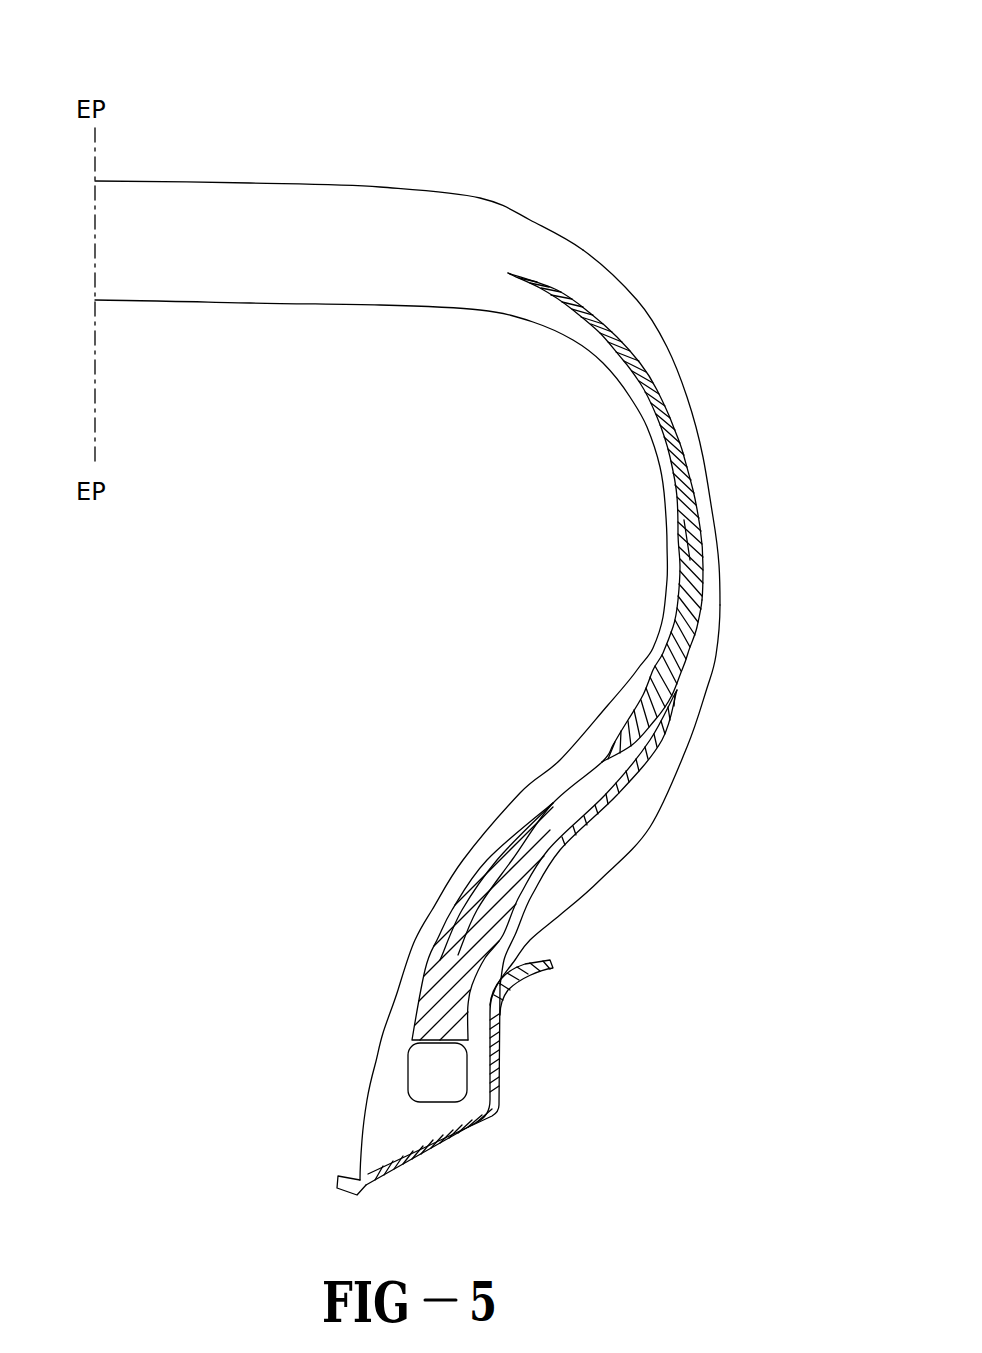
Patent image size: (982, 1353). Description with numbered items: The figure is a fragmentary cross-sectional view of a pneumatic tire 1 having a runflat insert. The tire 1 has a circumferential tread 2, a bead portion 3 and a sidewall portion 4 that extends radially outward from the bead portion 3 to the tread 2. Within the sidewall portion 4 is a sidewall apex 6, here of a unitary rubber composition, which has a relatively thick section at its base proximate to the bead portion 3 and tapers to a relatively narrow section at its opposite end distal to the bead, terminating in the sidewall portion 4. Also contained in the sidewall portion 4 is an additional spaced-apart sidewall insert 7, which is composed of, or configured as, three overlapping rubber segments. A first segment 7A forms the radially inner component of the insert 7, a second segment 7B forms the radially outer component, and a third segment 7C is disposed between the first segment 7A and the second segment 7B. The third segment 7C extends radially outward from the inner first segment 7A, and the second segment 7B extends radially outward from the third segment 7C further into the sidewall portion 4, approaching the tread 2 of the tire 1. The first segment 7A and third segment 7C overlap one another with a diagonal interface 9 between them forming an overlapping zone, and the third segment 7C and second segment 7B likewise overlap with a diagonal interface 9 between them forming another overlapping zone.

The pneumatic tire 1 is at (628, 102).
The circumferential tread 2 is at (323, 184).
The bead portion 3 is at (415, 1078).
The sidewall portion 4 is at (730, 482).
The sidewall apex 6 is at (629, 826).
The spaced-apart sidewall insert 7 is at (663, 583).
The first segment 7A is at (687, 657).
The second segment 7B is at (656, 416).
The third segment 7C is at (693, 560).
The diagonal interface 9 is at (685, 543).